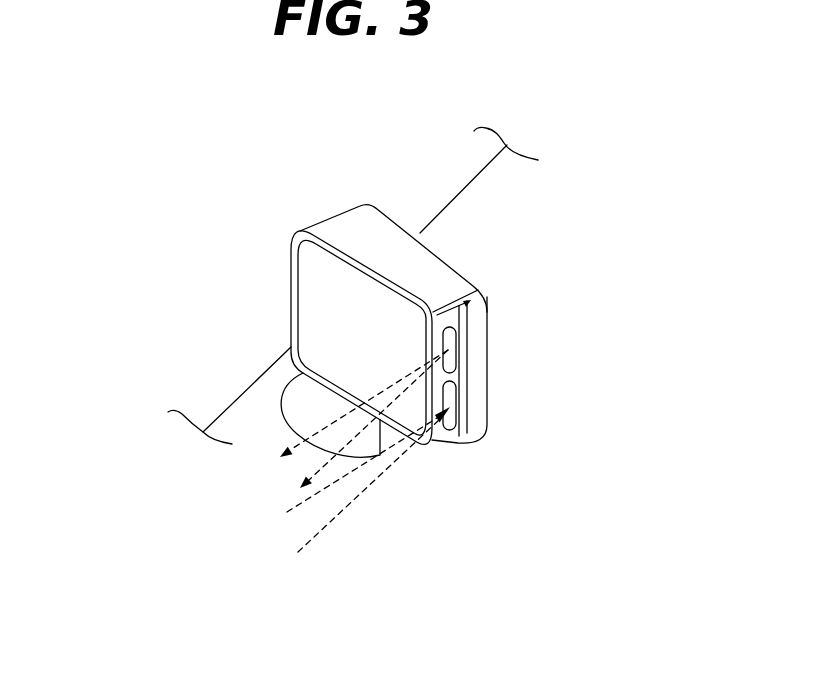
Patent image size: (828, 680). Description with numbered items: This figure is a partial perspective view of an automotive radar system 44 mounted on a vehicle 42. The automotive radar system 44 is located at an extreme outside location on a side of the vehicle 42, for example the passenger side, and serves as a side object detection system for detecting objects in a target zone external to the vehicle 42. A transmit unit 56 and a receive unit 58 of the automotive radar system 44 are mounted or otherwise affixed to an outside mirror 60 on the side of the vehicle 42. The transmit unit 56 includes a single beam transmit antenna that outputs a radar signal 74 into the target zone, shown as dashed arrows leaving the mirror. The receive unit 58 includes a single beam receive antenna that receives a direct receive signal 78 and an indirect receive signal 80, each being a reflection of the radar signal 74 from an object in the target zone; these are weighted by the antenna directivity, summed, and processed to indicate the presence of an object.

The vehicle 42 is at (473, 178).
The automotive radar system 44 is at (481, 292).
The transmit unit 56 is at (452, 338).
The receive unit 58 is at (451, 397).
The outside mirror 60 is at (433, 252).
The radar signal 74 is at (330, 424).
The direct receive signal 78 is at (326, 480).
The indirect receive signal 80 is at (338, 486).